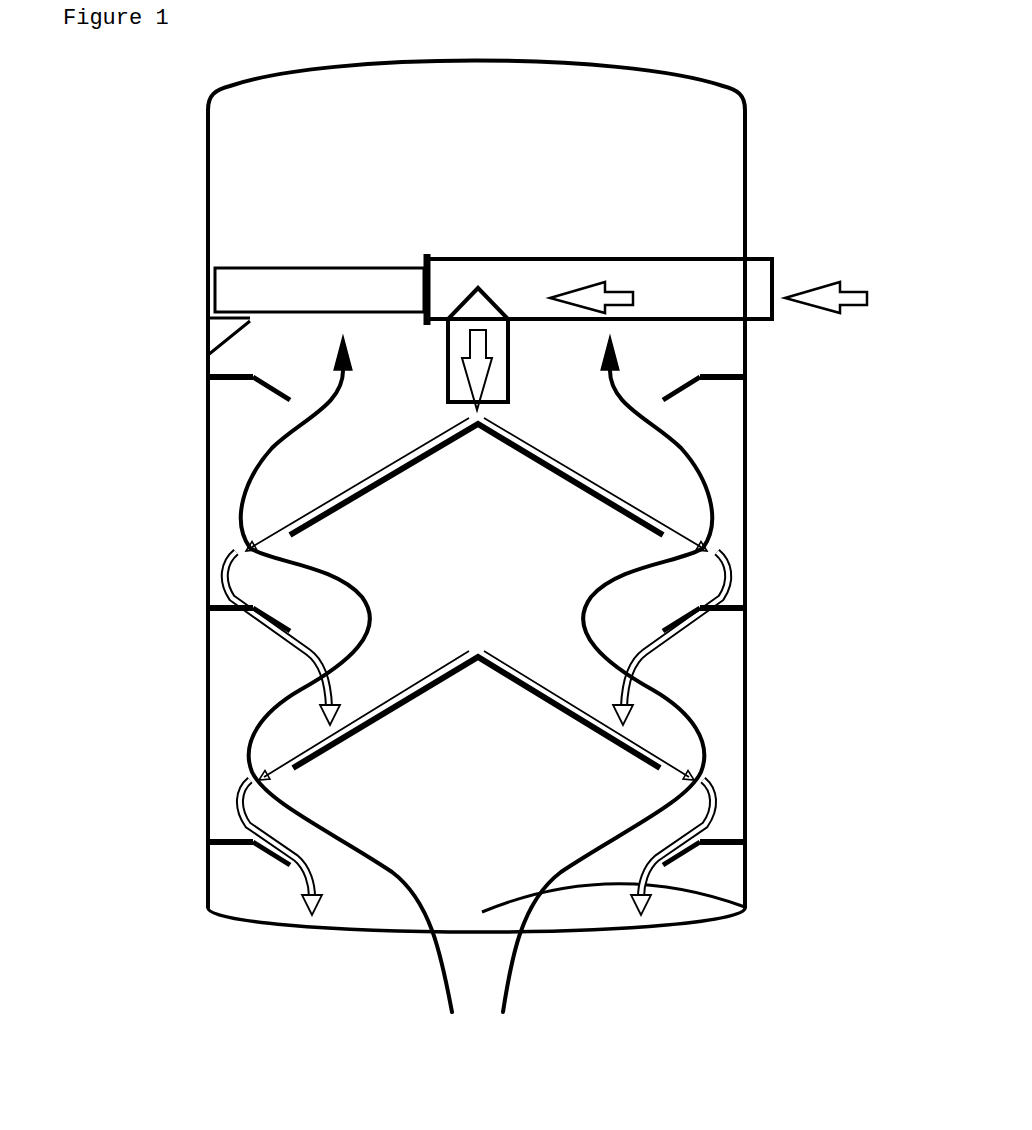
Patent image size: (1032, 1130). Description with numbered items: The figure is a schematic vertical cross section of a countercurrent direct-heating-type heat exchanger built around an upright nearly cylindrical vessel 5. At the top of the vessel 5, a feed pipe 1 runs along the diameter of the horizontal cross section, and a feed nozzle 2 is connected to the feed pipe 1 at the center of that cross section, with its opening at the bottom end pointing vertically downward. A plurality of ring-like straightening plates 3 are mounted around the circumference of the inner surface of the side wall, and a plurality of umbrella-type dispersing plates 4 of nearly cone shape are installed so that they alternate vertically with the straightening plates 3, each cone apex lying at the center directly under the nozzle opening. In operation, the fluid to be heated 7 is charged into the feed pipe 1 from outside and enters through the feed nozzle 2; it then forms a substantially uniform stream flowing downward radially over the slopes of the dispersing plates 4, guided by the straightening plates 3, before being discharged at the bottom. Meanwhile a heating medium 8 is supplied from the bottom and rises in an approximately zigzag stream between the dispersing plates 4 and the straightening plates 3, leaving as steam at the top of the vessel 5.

The feed pipe 1 is at (703, 298).
The feed nozzle 2 is at (496, 349).
The ring-like straightening plates 3 is at (255, 393).
The umbrella-type dispersing plates 4 is at (540, 467).
The nearly cylindrical vessel 5 is at (707, 85).
The fluid to be heated 7 is at (923, 311).
The heating medium 8 is at (495, 1053).